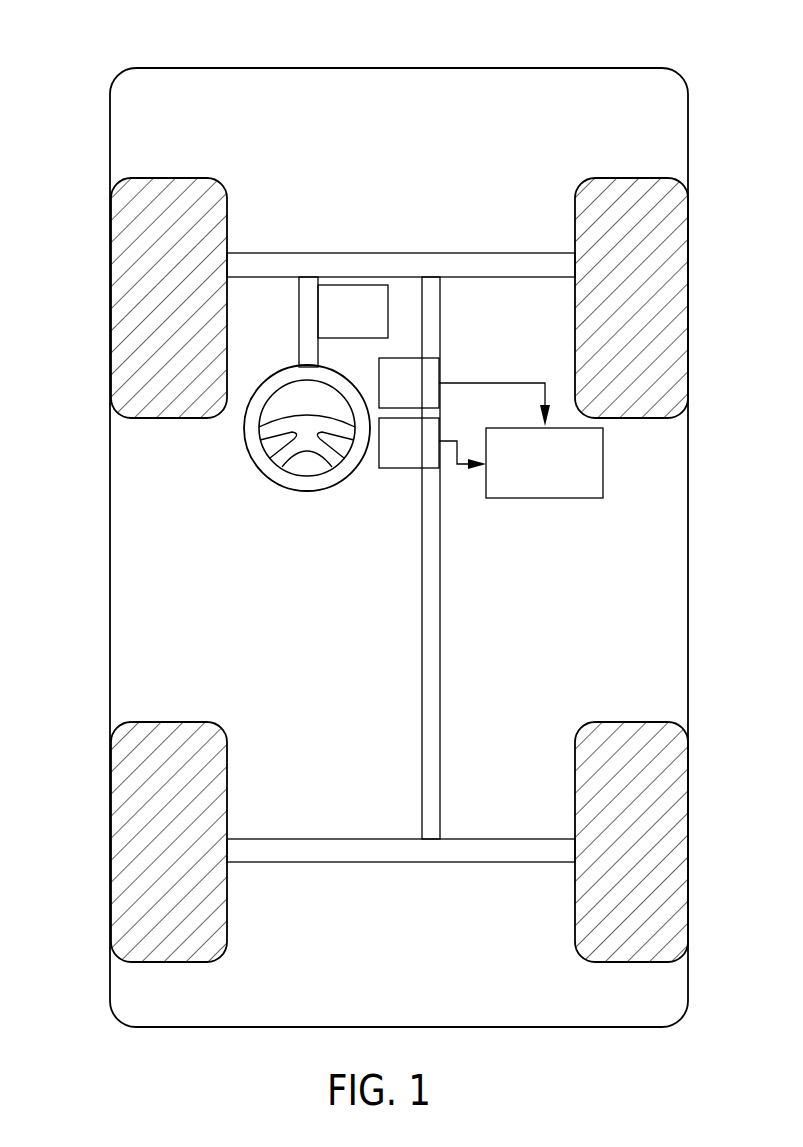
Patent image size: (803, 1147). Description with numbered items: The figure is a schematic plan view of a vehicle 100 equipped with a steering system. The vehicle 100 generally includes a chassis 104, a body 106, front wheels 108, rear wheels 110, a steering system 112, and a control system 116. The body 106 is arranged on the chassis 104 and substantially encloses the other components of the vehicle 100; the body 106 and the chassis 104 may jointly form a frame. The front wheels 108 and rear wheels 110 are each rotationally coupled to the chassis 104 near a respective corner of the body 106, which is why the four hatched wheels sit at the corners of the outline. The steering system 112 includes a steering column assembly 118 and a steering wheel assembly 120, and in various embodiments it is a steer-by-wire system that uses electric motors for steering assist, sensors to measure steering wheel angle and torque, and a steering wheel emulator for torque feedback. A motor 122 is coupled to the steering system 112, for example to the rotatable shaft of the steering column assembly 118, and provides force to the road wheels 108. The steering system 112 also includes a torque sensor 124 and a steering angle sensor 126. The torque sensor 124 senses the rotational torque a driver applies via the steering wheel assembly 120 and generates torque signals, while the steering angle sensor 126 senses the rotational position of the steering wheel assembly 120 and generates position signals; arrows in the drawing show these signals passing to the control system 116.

The vehicle 100 is at (488, 67).
The chassis 104 is at (440, 630).
The body 106 is at (110, 527).
The front wheels 108 is at (168, 178).
The rear wheels 110 is at (168, 722).
The steering system 112 is at (307, 230).
The control system 116 is at (558, 475).
The steering column assembly 118 is at (299, 330).
The steering wheel assembly 120 is at (262, 471).
The motor 122 is at (367, 323).
The torque sensor 124 is at (422, 394).
The steering angle sensor 126 is at (422, 454).